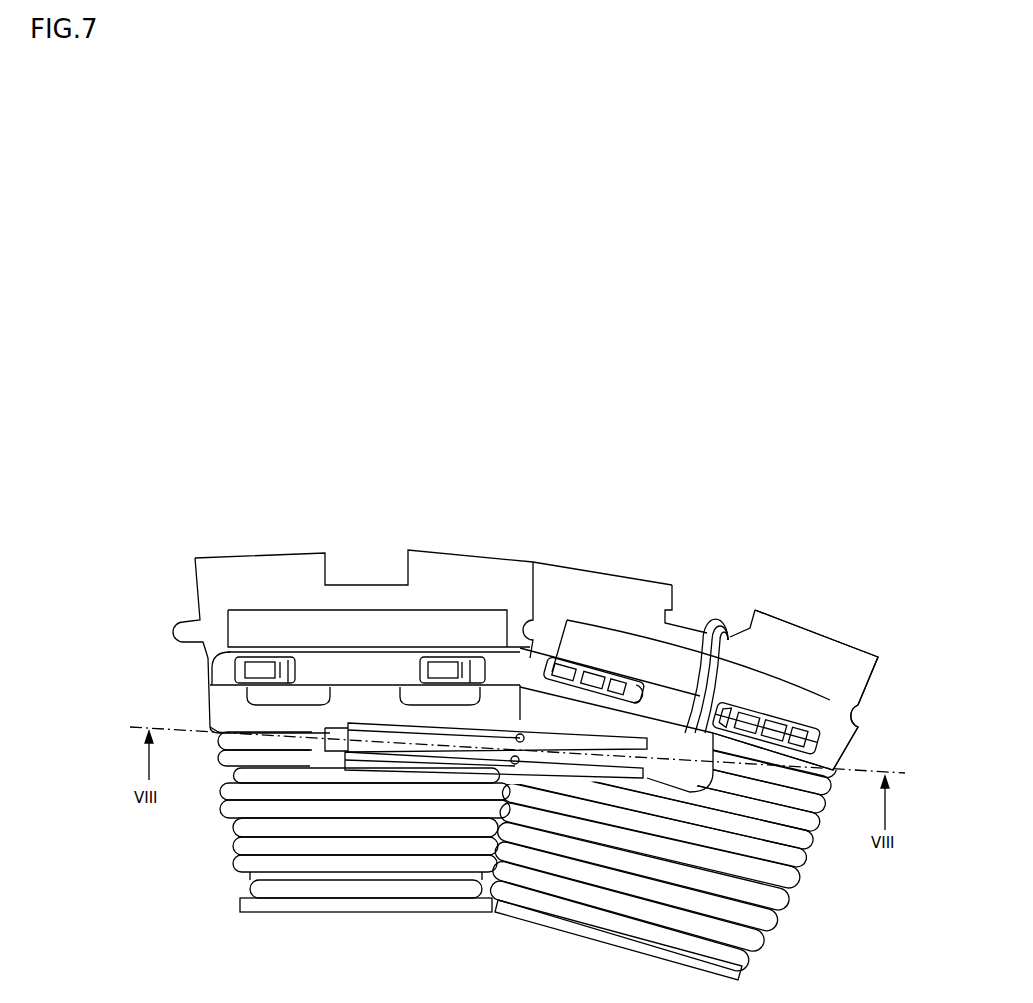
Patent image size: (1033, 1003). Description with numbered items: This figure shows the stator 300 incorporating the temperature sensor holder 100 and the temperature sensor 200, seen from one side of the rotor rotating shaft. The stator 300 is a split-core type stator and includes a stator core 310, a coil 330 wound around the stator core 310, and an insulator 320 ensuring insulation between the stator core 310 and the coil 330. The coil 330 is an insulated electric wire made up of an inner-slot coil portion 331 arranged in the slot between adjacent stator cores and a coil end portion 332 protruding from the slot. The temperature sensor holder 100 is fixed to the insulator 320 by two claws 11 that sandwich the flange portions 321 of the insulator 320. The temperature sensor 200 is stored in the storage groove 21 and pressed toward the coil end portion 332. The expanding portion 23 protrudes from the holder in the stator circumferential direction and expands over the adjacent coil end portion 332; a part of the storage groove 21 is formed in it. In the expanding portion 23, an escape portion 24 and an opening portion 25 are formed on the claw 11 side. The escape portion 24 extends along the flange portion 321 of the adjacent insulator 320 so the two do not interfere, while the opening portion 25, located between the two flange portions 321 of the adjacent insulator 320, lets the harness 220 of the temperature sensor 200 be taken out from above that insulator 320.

The temperature sensor holder 100 is at (173, 672).
The claw 11 is at (520, 735).
The temperature sensor 200 is at (748, 467).
The storage groove 21 is at (594, 680).
The expanding portion 23 is at (578, 675).
The escape portion 24 is at (625, 691).
The opening portion 25 is at (766, 728).
The harness 220 is at (716, 620).
The stator 300 is at (265, 503).
The stator core 310 is at (843, 658).
The insulator 320 is at (843, 717).
The flange portion 321 is at (265, 660).
The coil 330 is at (883, 873).
The inner-slot coil portion 331 is at (788, 883).
The coil end portion 332 is at (790, 865).